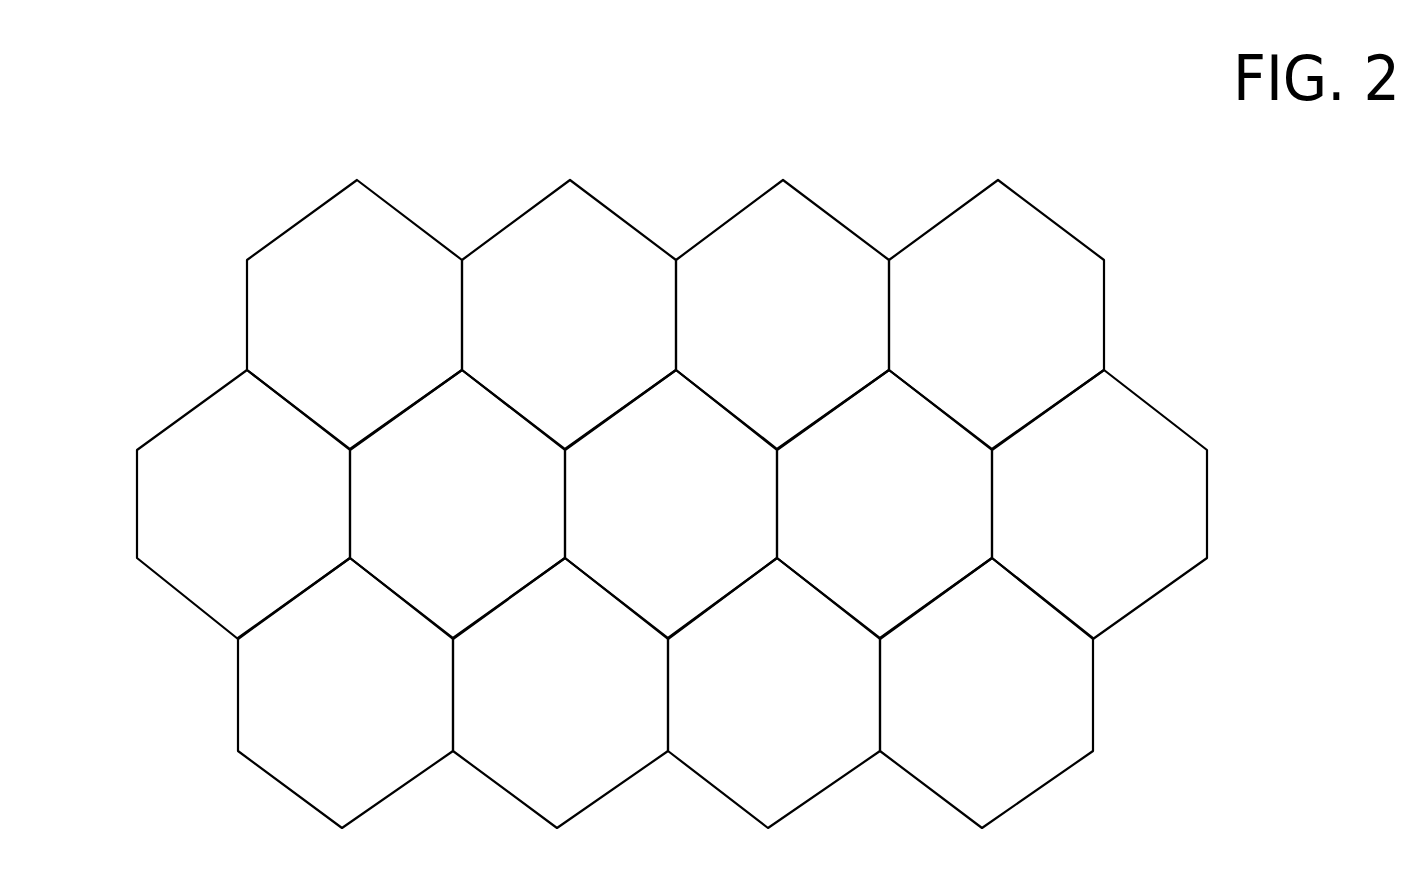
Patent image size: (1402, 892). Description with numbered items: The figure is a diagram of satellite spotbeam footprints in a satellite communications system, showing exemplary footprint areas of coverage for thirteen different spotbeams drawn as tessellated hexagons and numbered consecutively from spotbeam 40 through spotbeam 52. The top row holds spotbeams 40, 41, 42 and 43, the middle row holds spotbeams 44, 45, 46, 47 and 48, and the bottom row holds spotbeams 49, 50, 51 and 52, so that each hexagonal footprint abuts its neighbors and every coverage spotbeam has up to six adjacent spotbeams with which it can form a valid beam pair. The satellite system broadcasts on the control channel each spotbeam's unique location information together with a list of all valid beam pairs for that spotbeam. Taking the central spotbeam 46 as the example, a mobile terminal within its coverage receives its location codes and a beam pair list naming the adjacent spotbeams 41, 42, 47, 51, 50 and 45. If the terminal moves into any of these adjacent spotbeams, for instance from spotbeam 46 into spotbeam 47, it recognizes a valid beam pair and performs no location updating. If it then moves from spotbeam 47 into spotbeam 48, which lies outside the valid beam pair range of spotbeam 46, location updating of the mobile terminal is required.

The spotbeam 40 is at (354, 314).
The spotbeam 41 is at (569, 314).
The spotbeam 42 is at (782, 314).
The spotbeam 43 is at (996, 314).
The spotbeam 44 is at (243, 504).
The spotbeam 45 is at (457, 504).
The spotbeam 46 is at (671, 504).
The spotbeam 47 is at (884, 504).
The spotbeam 48 is at (1099, 504).
The spotbeam 49 is at (345, 693).
The spotbeam 50 is at (560, 693).
The spotbeam 51 is at (774, 693).
The spotbeam 52 is at (986, 693).